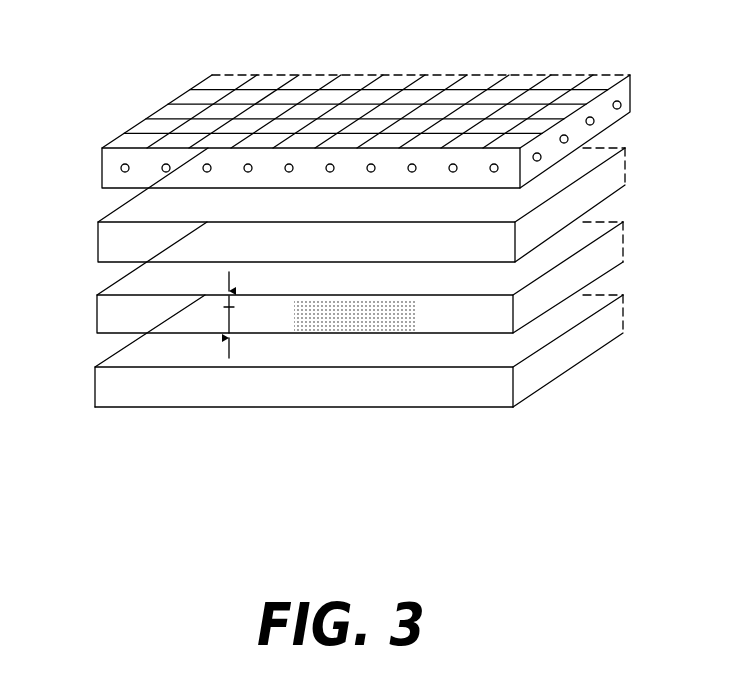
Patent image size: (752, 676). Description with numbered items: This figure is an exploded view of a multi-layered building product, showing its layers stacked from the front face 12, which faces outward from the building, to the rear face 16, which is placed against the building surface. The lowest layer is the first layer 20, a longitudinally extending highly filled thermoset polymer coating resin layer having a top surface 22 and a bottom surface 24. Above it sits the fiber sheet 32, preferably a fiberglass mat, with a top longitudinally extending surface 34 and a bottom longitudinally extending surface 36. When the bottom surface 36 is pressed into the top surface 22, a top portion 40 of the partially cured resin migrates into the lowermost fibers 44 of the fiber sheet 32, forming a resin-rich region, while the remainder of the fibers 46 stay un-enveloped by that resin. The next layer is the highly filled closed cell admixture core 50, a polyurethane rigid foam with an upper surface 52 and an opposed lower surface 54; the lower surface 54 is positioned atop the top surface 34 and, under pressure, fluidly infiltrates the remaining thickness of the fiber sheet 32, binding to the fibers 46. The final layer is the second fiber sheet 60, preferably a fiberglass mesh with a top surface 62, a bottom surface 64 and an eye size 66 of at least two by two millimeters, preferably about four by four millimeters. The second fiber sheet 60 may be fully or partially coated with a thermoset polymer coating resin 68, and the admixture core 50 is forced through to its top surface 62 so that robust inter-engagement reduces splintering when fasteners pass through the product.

The front face 12 is at (492, 407).
The rear face 16 is at (202, 103).
The first layer 20 is at (95, 390).
The top surface 22 is at (593, 303).
The bottom surface 24 is at (563, 373).
The fiber sheet 32 is at (97, 318).
The top longitudinally extending surface 34 is at (588, 232).
The bottom longitudinally extending surface 36 is at (622, 263).
The top portion of the thermoset coating composition layer 40 is at (168, 397).
The lowermost fibers 44 is at (352, 322).
The remainder of the fibers 46 is at (403, 310).
The admixture core 50 is at (98, 245).
The upper surface 52 is at (593, 162).
The lower surface 54 is at (618, 195).
The second fiber sheet 60 is at (100, 171).
The top surface 62 is at (550, 88).
The bottom surface 64 is at (620, 122).
The eye size 66 is at (341, 86).
The thermoset polymer coating resin 68 is at (209, 84).